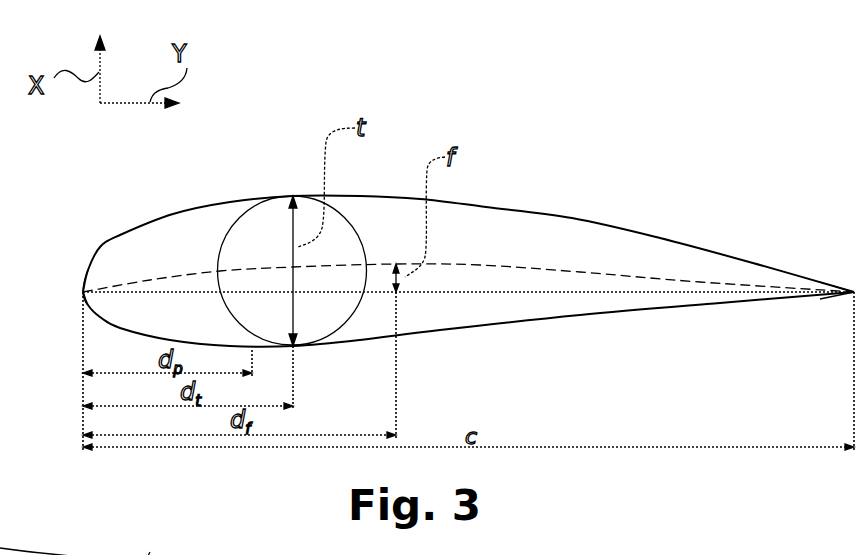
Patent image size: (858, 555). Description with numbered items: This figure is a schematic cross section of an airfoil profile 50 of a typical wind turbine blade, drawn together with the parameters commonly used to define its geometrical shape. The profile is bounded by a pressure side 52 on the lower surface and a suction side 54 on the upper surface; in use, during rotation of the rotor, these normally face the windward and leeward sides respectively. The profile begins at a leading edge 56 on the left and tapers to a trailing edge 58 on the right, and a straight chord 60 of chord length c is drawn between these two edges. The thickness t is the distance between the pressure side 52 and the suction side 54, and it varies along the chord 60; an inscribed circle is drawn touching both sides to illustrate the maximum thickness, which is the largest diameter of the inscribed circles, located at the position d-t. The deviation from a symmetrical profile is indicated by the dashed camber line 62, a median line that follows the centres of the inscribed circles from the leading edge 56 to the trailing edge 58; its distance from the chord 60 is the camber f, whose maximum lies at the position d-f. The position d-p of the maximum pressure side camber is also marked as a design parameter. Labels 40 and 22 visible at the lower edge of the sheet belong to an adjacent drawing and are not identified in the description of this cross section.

The airfoil profile 50 is at (451, 220).
The pressure side 52 is at (620, 317).
The suction side 54 is at (562, 210).
The leading edge 56 is at (83, 292).
The trailing edge 58 is at (854, 291).
The chord 60 is at (657, 291).
The camber line 62 is at (457, 264).
The blade portion 40 is at (45, 512).
The blade 22 is at (148, 554).